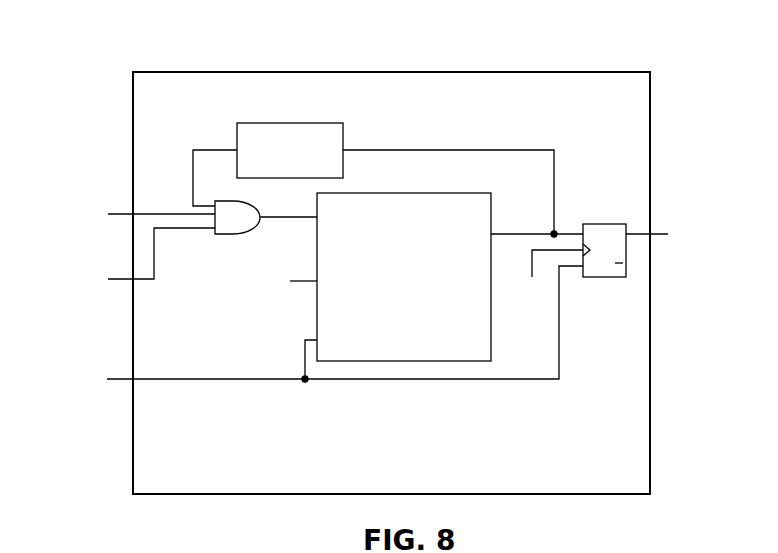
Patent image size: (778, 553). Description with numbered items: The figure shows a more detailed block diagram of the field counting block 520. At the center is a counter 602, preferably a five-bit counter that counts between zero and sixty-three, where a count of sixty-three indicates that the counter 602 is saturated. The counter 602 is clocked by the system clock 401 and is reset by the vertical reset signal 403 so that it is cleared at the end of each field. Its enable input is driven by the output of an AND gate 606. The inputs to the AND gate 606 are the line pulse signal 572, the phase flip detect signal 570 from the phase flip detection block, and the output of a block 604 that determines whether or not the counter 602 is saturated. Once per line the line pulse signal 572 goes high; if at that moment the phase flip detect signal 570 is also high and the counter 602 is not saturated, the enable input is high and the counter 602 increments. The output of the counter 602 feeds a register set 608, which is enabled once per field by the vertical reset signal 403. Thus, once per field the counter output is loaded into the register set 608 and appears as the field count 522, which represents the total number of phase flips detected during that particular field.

The field counting block 520 is at (391, 283).
The block that determines whether the counter is saturated 604 is at (297, 135).
The AND gate 606 is at (233, 219).
The phase flip detect signal 570 is at (116, 209).
The line pulse signal 572 is at (130, 273).
The counter 602 is at (450, 277).
The system clock 401 is at (408, 286).
The vertical reset signal 403 is at (300, 340).
The register set 608 is at (600, 233).
The field count 522 is at (680, 235).